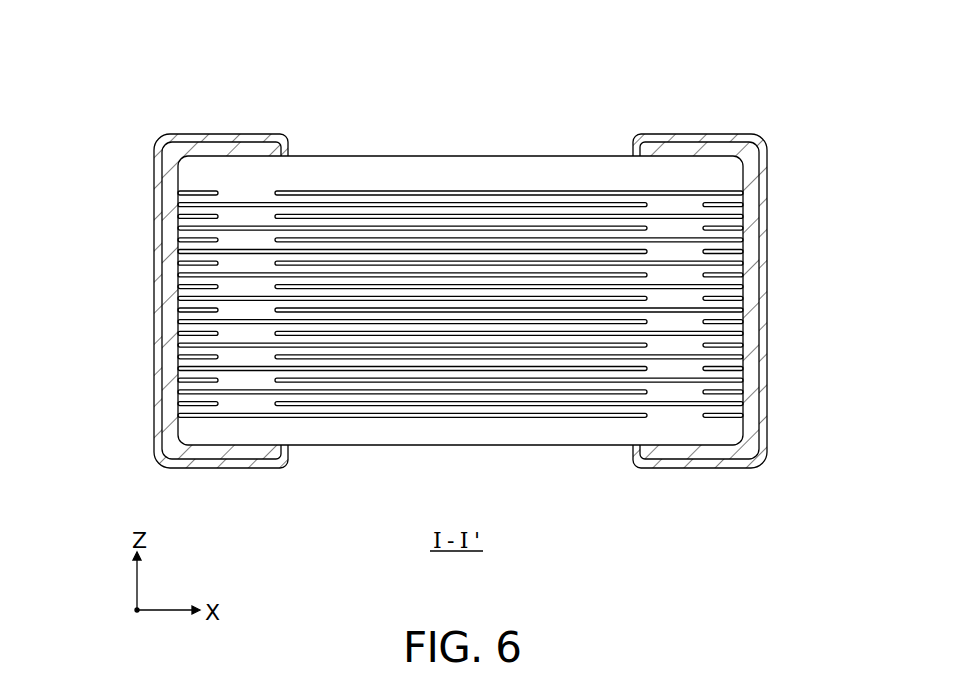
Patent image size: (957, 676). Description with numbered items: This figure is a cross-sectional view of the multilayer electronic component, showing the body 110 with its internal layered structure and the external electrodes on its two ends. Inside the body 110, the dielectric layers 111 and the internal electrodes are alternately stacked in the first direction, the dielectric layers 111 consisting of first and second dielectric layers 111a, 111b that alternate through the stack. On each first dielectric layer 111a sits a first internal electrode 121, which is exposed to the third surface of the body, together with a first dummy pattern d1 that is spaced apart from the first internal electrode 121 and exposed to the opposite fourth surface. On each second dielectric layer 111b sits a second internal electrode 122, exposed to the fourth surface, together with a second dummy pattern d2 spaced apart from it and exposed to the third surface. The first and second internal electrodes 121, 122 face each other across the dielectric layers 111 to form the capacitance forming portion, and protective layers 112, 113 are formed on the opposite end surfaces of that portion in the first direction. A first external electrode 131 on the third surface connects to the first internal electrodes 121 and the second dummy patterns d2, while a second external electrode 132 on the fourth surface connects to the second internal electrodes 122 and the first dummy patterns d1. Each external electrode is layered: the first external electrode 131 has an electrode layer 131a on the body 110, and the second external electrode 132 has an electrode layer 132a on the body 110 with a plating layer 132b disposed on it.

The body 110 is at (615, 155).
The dielectric layer 111 is at (418, 80).
The first dielectric layer 111a is at (419, 210).
The second dielectric layer 111b is at (317, 198).
The protective layer 112 is at (535, 172).
The protective layer 113 is at (538, 428).
The first internal electrode 121 is at (492, 203).
The second internal electrode 122 is at (578, 192).
The first external electrode 131 is at (73, 285).
The electrode layer 131a is at (168, 289).
The second external electrode 132 is at (850, 288).
The electrode layer 132a is at (766, 290).
The plating layer 132b is at (157, 327).
The first dummy pattern d1 is at (737, 228).
The second dummy pattern d2 is at (198, 217).